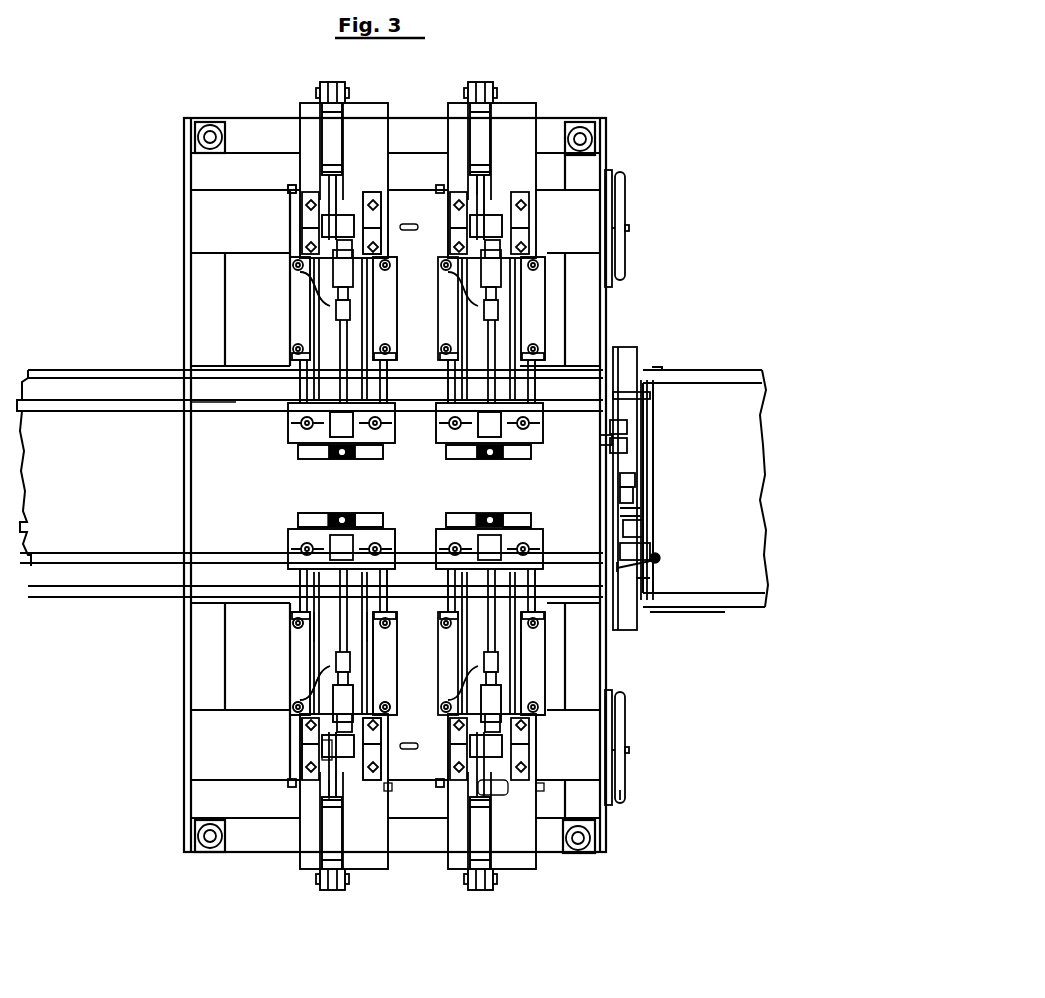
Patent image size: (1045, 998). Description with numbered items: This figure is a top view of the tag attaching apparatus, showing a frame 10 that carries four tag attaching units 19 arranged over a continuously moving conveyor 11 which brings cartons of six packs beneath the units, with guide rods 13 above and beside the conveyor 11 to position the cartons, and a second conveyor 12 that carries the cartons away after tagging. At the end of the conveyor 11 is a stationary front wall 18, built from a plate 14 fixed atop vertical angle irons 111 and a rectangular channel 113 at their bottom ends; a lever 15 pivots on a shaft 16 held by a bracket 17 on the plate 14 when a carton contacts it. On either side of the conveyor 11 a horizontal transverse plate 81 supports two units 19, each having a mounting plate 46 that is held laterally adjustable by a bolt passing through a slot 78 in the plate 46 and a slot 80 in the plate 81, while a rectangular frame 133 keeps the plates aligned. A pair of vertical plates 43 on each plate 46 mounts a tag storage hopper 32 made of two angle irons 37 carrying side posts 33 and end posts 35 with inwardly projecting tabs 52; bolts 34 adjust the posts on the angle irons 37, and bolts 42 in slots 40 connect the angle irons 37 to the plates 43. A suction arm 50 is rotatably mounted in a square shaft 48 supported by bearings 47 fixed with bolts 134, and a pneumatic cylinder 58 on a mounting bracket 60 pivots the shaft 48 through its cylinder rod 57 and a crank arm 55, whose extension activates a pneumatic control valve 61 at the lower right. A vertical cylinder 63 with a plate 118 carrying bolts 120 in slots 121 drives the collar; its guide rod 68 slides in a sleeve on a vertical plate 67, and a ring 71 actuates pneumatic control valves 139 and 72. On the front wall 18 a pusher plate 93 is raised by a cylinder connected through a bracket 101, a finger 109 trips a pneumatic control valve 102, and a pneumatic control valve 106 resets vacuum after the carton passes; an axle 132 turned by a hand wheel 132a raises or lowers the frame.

The frame 10 is at (249, 864).
The continuously moving conveyor 11 is at (110, 479).
The second continuously moving conveyor 12 is at (727, 449).
The guide rods 13 is at (236, 410).
The plate 14 is at (615, 395).
The lever 15 is at (605, 440).
The shaft 16 is at (622, 450).
The bracket 17 is at (625, 437).
The front wall 18 is at (645, 345).
The tag attaching unit 19 is at (396, 322).
The tag storage hopper 32 is at (302, 316).
The side posts 33 is at (381, 626).
The bolts 34 is at (384, 700).
The end posts 35 is at (340, 728).
The angle irons 37 is at (292, 287).
The slots 40 is at (292, 626).
The bolts 42 is at (297, 618).
The vertical plates 43 is at (298, 365).
The mounting plate 46 is at (352, 133).
The bearings 47 is at (378, 222).
The square shaft 48 is at (348, 222).
The suction arm 50 is at (330, 397).
The inwardly projecting tabs 52 is at (341, 628).
The crank arm 55 is at (335, 750).
The cylinder rod 57 is at (478, 185).
The pneumatic cylinder 58 is at (332, 122).
The mounting bracket 60 is at (347, 87).
The pneumatic control valve 61 is at (494, 795).
The vertical cylinder 63 is at (352, 436).
The vertical plate 67 is at (525, 525).
The guide rod 68 is at (344, 518).
The ring 71 is at (341, 517).
The pneumatic control valves 72 is at (312, 517).
The slot 78 is at (345, 215).
The slot 80 is at (398, 228).
The horizontal transverse plate 81 is at (222, 229).
The pusher plate 93 is at (630, 480).
The bracket 101 is at (628, 495).
The pneumatic control valve 102 is at (635, 548).
The pneumatic control valve 106 is at (645, 574).
The finger 109 is at (630, 530).
The vertical angle irons 111 is at (615, 350).
The rectangular channel 113 is at (628, 513).
The plate 118 is at (300, 445).
The bolts 120 is at (300, 548).
The slots 121 is at (390, 548).
The axle 132 is at (622, 745).
The hand wheel 132a is at (640, 800).
The rectangular frame 133 is at (290, 188).
The bolts 134 is at (300, 775).
The pneumatic control valve 139 is at (372, 515).